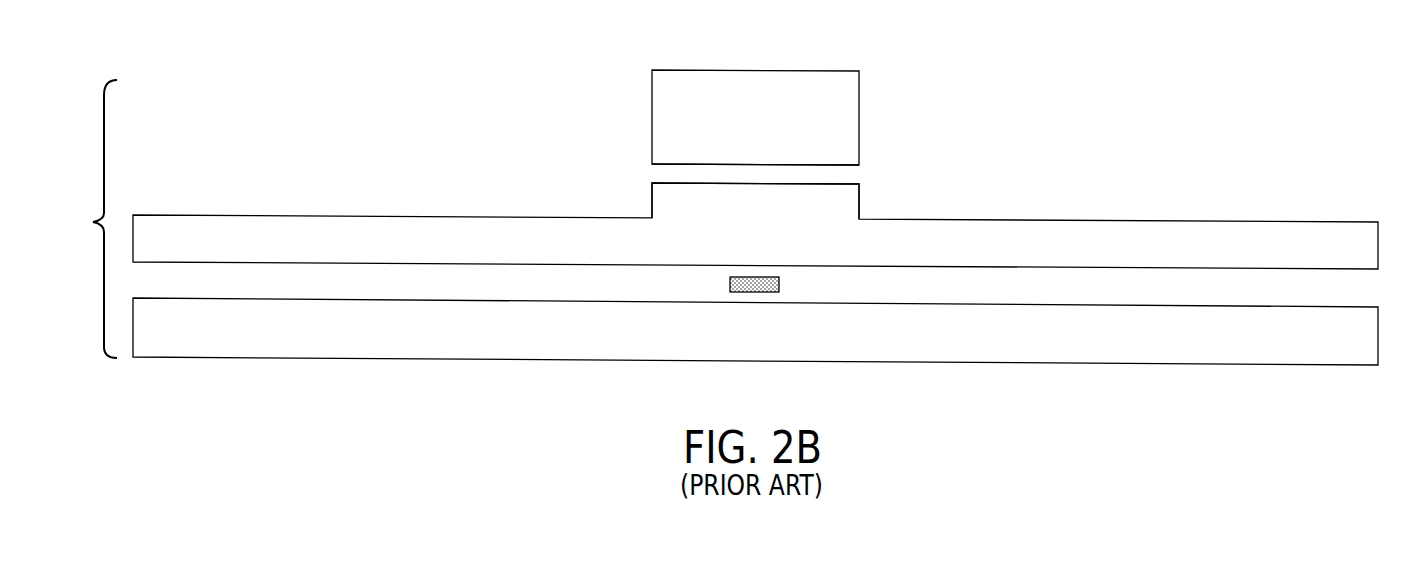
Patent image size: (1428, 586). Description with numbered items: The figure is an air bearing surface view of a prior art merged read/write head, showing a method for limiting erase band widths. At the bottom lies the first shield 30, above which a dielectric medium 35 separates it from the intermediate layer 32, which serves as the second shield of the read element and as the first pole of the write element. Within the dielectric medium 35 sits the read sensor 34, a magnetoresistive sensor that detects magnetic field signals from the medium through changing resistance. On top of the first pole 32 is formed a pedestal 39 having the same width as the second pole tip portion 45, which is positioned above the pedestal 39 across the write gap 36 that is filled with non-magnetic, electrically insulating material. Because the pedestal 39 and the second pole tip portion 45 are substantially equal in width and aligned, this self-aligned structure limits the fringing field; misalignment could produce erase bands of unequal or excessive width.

The first shield 30 is at (1203, 347).
The intermediate layer 32 is at (1202, 240).
The read sensor 34 is at (755, 287).
The dielectric medium 35 is at (1355, 289).
The write gap 36 is at (840, 175).
The pedestal 39 is at (840, 208).
The second pole tip portion 45 is at (757, 87).